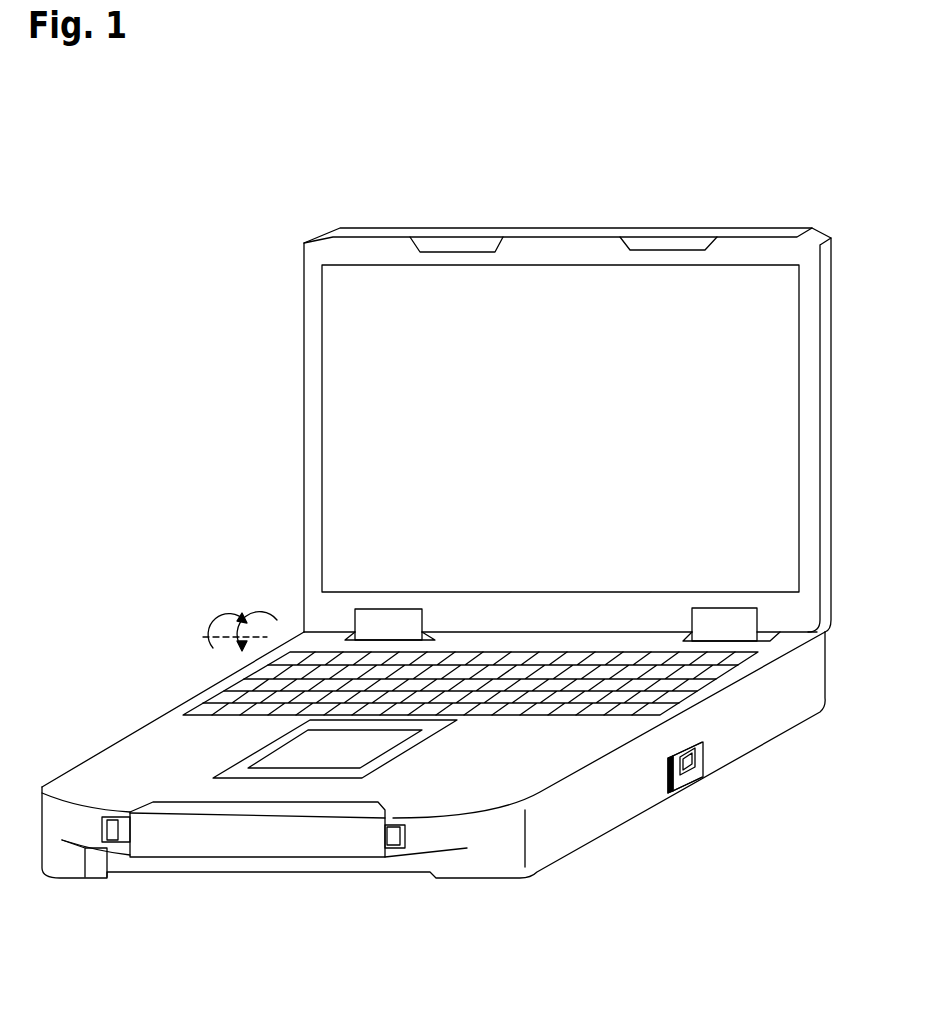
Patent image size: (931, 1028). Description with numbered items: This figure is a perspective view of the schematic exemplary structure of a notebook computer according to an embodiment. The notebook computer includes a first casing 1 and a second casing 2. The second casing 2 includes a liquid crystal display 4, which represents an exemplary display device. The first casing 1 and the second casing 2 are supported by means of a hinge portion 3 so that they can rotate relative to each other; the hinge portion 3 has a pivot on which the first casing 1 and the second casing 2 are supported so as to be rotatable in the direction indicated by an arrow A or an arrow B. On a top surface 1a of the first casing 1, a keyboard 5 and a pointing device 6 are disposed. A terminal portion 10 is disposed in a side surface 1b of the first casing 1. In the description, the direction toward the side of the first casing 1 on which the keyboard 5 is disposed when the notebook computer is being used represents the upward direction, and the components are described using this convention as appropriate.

The first casing 1 is at (730, 738).
The top surface 1a is at (154, 769).
The side surface 1b is at (587, 806).
The second casing 2 is at (312, 457).
The hinge portion 3 is at (365, 622).
The liquid crystal display 4 is at (338, 363).
The keyboard 5 is at (213, 692).
The pointing device 6 is at (305, 750).
The terminal portion 10 is at (697, 777).
The arrow A is at (250, 616).
The arrow B is at (227, 616).